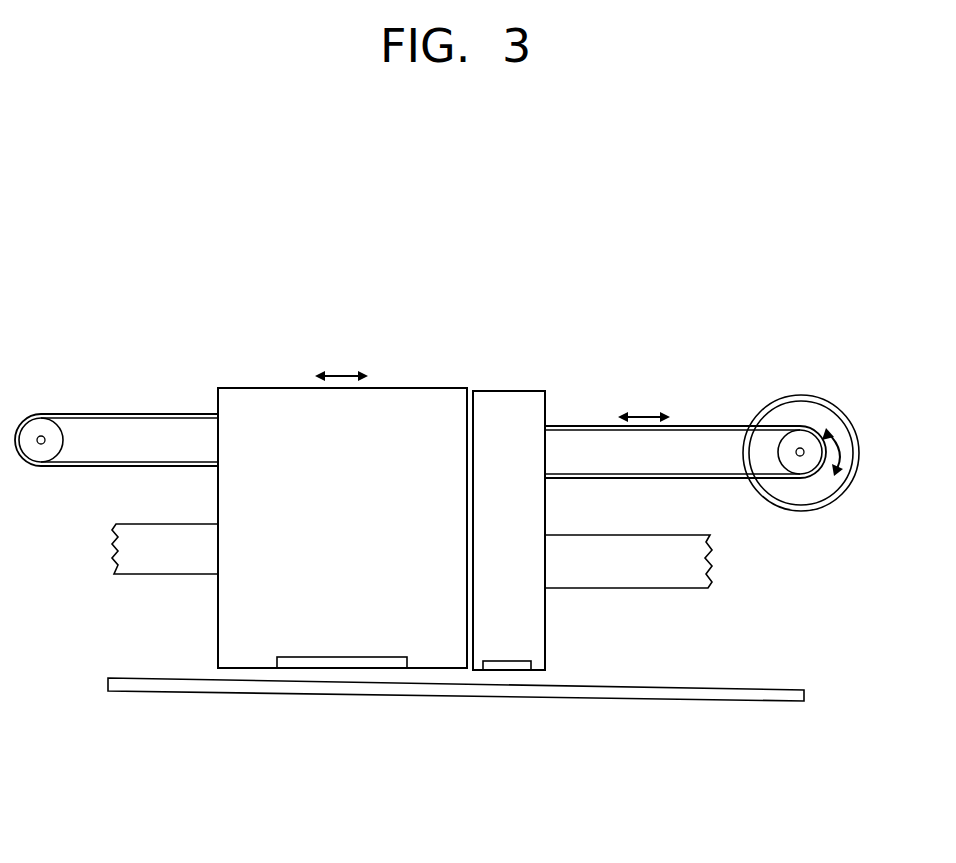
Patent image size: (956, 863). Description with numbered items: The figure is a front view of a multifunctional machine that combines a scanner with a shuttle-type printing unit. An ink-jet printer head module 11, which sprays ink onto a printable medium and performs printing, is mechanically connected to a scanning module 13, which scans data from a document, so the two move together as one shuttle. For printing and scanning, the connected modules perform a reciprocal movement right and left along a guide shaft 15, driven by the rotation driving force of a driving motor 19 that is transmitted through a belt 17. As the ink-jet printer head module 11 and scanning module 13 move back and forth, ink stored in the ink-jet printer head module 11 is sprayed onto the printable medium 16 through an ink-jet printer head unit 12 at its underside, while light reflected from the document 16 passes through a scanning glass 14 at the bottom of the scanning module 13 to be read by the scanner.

The ink-jet printer head module 11 is at (225, 622).
The ink-jet printer head unit 12 is at (342, 662).
The scanning module 13 is at (512, 396).
The scanning glass 14 is at (512, 662).
The guide shaft 15 is at (706, 562).
The printable medium 16 is at (685, 691).
The belt 17 is at (698, 425).
The driving motor 19 is at (813, 415).